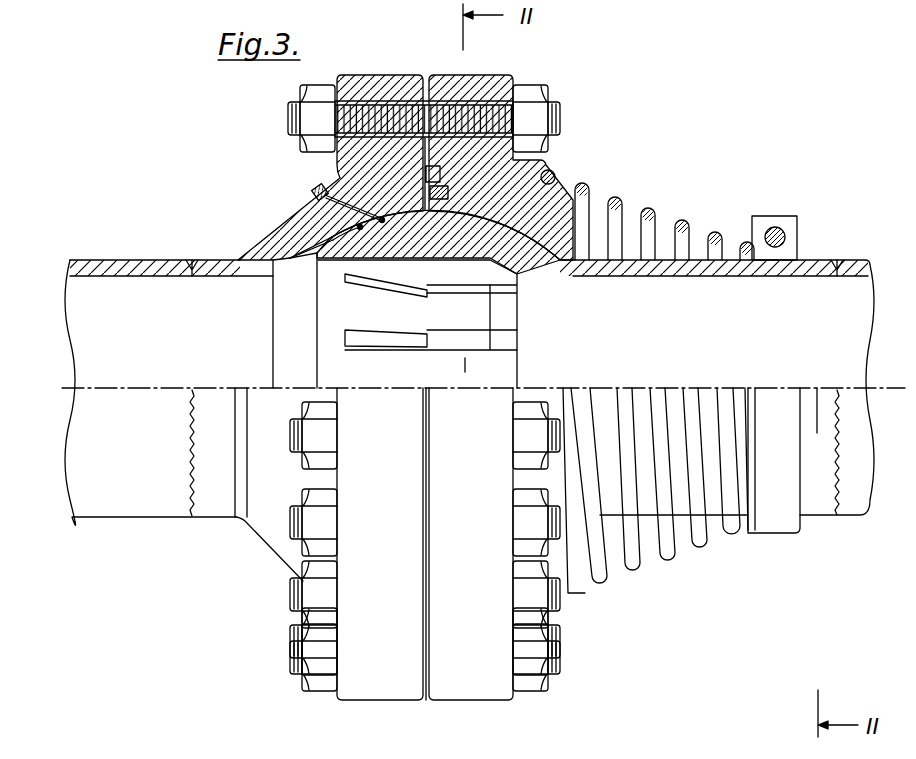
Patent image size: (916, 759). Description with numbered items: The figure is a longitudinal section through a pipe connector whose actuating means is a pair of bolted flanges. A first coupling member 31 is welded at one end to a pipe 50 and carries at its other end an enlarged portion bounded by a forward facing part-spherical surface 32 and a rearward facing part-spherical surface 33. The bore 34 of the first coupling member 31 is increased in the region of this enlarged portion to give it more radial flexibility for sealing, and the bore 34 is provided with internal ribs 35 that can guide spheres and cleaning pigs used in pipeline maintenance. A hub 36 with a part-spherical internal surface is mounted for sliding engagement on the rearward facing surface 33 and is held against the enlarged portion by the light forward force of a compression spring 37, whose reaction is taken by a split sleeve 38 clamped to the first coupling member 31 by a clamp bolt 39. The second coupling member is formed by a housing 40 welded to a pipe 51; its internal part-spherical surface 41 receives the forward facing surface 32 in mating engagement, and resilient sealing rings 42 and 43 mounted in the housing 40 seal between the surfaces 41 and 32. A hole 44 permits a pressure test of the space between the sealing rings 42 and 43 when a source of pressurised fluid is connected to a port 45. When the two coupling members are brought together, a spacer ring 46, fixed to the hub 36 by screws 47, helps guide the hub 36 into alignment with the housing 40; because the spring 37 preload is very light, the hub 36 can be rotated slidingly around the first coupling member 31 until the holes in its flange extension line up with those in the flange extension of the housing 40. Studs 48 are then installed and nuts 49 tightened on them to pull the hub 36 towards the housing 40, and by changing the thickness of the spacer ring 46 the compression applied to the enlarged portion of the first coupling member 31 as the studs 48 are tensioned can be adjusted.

The first coupling member 31 is at (640, 268).
The forward facing part-spherical surface 32 is at (318, 264).
The rearward facing part-spherical surface 33 is at (560, 192).
The bore 34 is at (398, 263).
The internal ribs 35 is at (450, 300).
The hub 36 is at (543, 162).
The compression spring 37 is at (627, 207).
The split sleeve 38 is at (761, 215).
The clamp bolt 39 is at (778, 229).
The housing 40 is at (285, 225).
The internal part-spherical surface 41 is at (360, 226).
The resilient sealing ring 42 is at (342, 265).
The resilient sealing ring 43 is at (364, 265).
The hole 44 is at (316, 187).
The port 45 is at (314, 195).
The spacer ring 46 is at (436, 190).
The screws 47 is at (448, 193).
The studs 48 is at (372, 105).
The nuts 49 is at (300, 100).
The pipe 50 is at (858, 262).
The pipe 51 is at (135, 262).